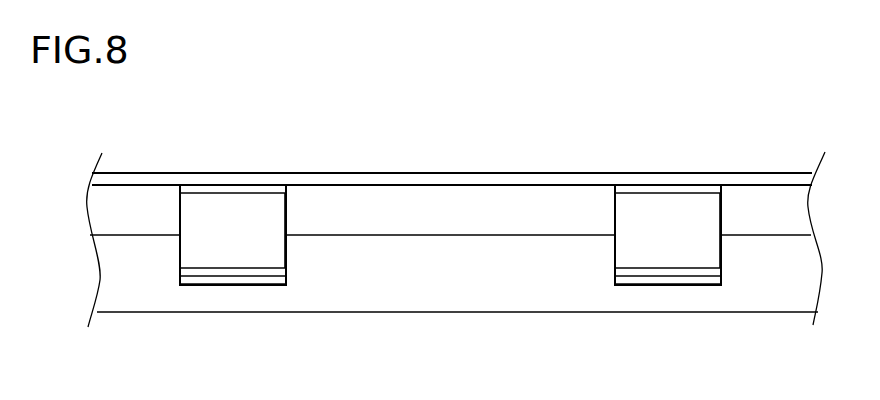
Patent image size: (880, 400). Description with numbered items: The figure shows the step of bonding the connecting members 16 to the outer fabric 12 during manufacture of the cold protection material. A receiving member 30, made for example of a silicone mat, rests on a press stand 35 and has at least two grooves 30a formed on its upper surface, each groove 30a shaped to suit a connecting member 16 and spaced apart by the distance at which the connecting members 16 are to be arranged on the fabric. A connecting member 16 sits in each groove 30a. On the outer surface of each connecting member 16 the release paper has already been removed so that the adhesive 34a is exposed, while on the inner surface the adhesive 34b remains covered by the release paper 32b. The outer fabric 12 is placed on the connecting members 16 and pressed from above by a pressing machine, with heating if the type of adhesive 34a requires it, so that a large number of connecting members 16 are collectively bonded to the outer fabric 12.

The outer fabric 12 is at (380, 173).
The connecting member 16 is at (176, 223).
The receiving member 30 is at (437, 235).
The groove 30a is at (284, 249).
The adhesive 34a is at (235, 186).
The adhesive 34b is at (202, 280).
The release paper 32b is at (250, 286).
The press stand 35 is at (405, 358).